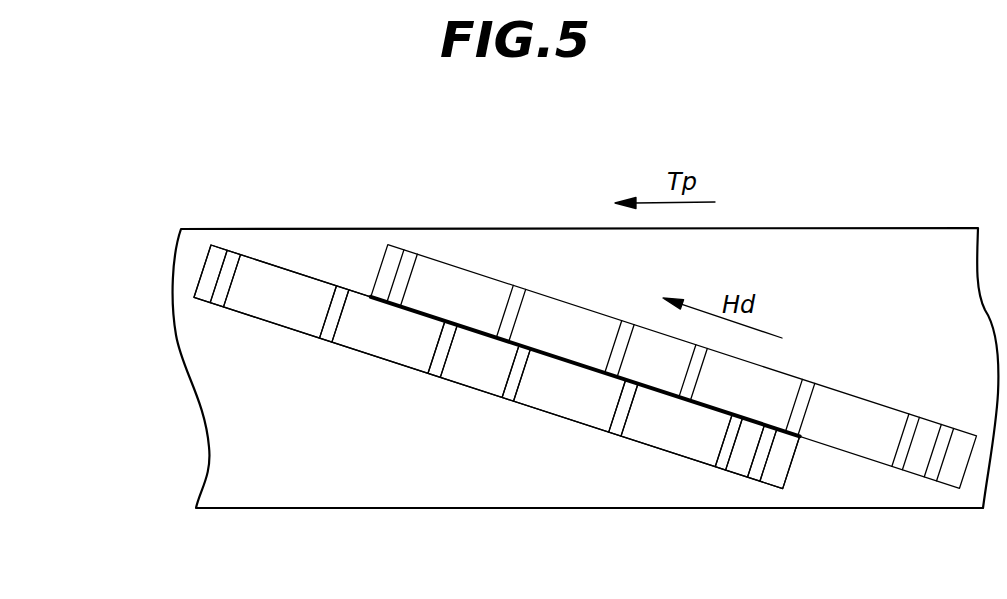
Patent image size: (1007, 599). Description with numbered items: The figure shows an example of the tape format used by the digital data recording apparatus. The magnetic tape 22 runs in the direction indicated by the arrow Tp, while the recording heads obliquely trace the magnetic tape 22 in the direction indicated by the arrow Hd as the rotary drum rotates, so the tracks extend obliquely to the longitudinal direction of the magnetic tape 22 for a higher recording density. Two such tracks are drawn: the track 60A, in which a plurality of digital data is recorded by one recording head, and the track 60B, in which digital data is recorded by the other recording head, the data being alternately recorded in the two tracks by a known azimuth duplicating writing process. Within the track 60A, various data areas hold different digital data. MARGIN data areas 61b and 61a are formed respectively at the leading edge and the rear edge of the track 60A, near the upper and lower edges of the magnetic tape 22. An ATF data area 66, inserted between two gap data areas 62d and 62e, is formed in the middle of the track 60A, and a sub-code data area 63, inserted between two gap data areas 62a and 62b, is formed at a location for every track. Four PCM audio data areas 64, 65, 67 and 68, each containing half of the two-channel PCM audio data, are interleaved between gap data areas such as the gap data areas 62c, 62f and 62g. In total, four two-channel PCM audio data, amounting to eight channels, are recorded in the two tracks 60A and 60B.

The magnetic tape 22 is at (793, 229).
The track 60A is at (802, 477).
The track 60B is at (899, 480).
The MARGIN data area 61a is at (768, 477).
The MARGIN data area 61b is at (217, 262).
The gap data area 62a is at (755, 468).
The gap data area 62b is at (735, 424).
The gap data area 62c is at (612, 430).
The gap data area 62d is at (510, 390).
The gap data area 62e is at (428, 363).
The gap data area 62f is at (318, 340).
The gap data area 62g is at (222, 298).
The sub-code data area 63 is at (738, 463).
The PCM audio data area 64 is at (648, 433).
The PCM audio data area 65 is at (543, 390).
The ATF data area 66 is at (467, 377).
The PCM audio data area 67 is at (365, 343).
The PCM audio data area 68 is at (273, 313).